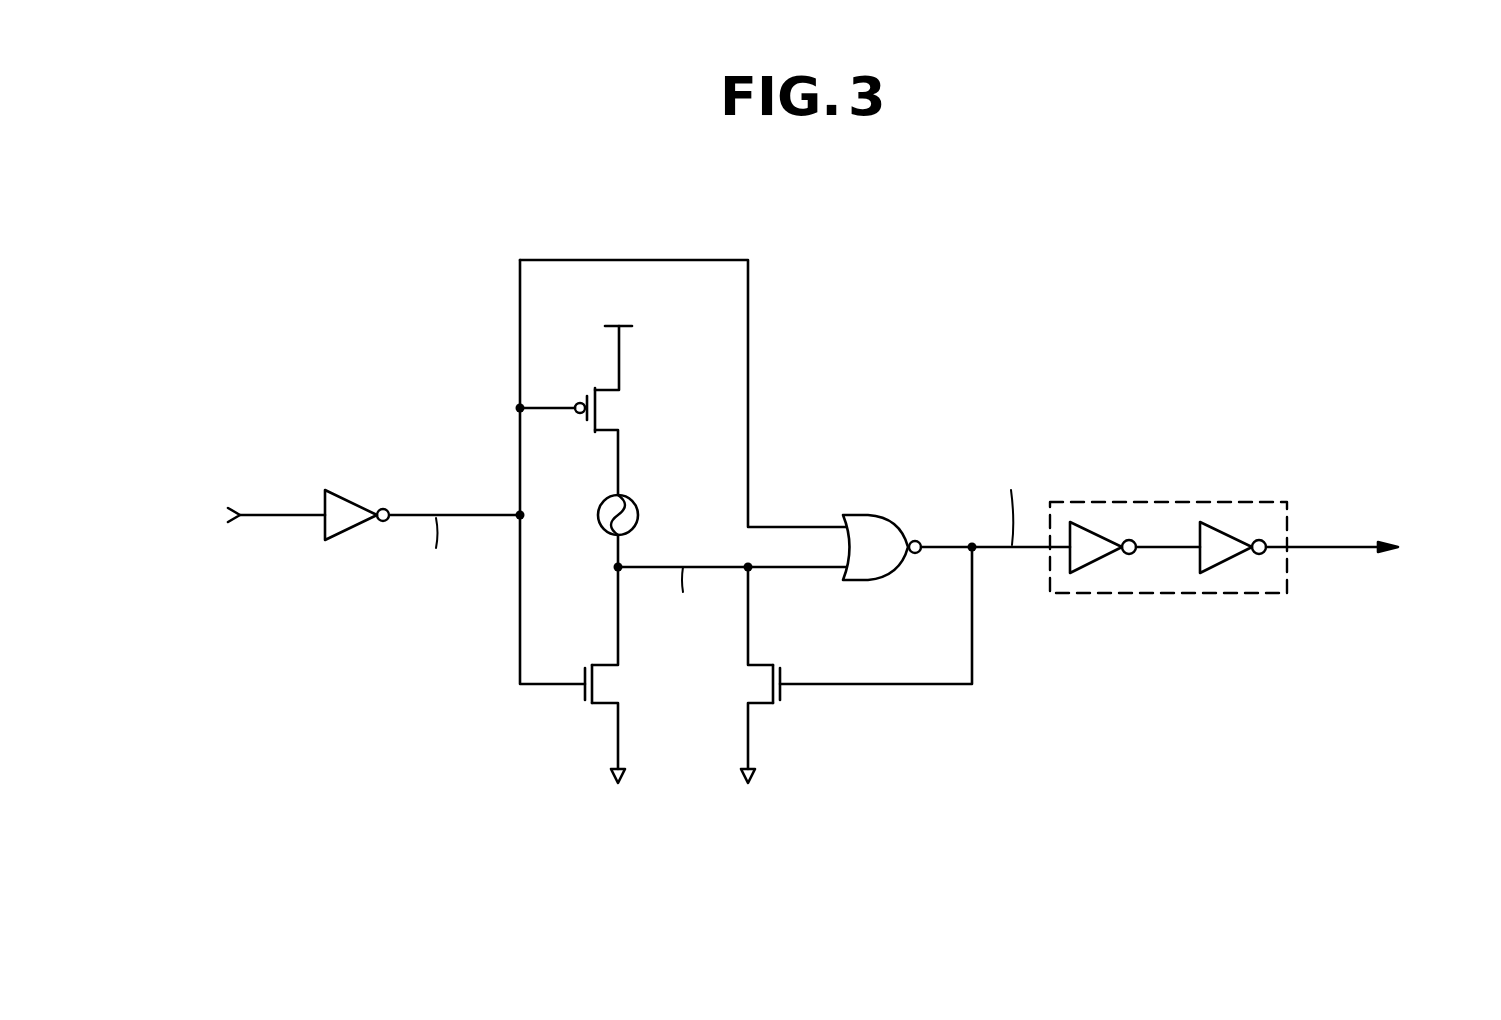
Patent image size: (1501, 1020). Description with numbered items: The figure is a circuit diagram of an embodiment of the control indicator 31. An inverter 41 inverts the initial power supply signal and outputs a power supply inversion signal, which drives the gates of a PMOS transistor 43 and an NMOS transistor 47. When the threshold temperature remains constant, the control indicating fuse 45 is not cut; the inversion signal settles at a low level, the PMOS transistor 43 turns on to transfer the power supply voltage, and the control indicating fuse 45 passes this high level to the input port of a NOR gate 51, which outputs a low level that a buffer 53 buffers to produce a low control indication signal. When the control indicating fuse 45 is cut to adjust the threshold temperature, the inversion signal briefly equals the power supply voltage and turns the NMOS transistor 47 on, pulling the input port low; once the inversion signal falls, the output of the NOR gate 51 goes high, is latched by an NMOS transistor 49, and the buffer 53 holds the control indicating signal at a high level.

The control indicator 31 is at (1168, 293).
The inverter 41 is at (350, 496).
The PMOS transistor 43 is at (603, 409).
The control indicating fuse 45 is at (640, 515).
The NMOS transistor 47 is at (603, 685).
The NMOS transistor 49 is at (757, 684).
The NOR gate 51 is at (856, 513).
The buffer 53 is at (1160, 502).